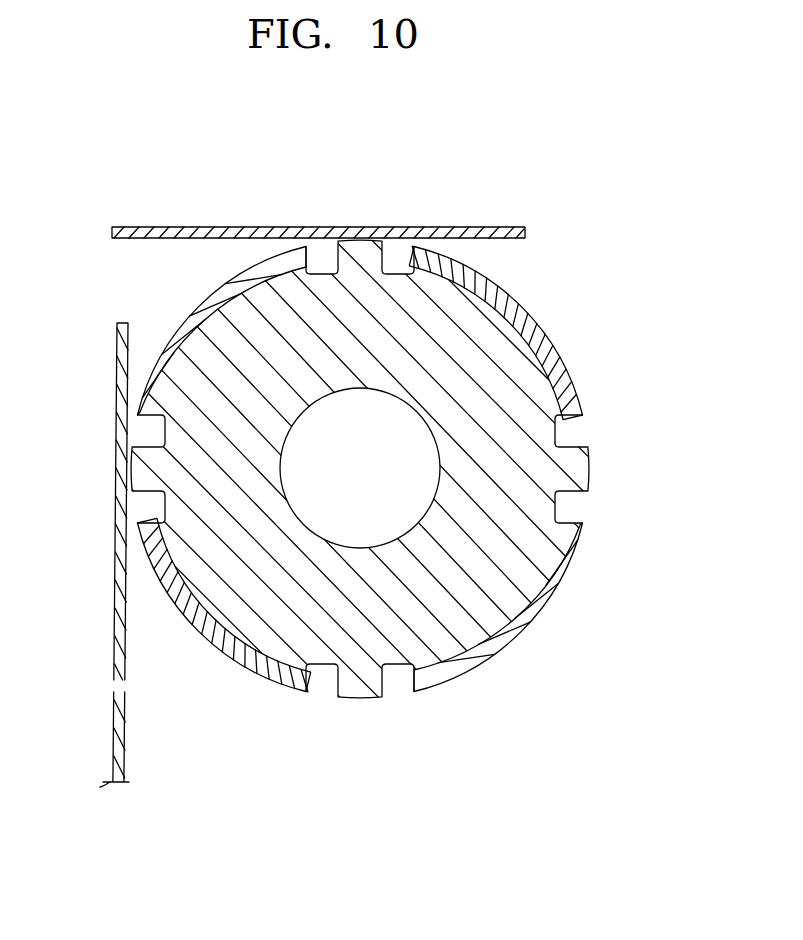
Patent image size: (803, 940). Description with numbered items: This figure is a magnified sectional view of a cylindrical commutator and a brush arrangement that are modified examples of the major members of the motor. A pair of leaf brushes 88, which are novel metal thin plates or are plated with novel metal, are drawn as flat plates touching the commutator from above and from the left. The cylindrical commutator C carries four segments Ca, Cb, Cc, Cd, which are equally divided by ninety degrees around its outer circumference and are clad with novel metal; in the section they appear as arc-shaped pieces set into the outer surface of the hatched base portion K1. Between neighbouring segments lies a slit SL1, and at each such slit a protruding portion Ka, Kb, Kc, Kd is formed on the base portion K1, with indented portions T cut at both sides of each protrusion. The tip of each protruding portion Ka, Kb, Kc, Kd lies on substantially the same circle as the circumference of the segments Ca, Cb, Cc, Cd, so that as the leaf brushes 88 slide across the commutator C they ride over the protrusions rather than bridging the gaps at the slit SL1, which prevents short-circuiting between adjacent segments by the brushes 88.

The leaf brushes 88 is at (492, 222).
The base portion K1 is at (473, 617).
The protruding portion Kd is at (359, 253).
The protruding portion Ka is at (585, 474).
The protruding portion Kb is at (353, 680).
The protruding portion Kc is at (131, 470).
The slit SL1 is at (603, 453).
The indented portions T is at (322, 685).
The cylindrical commutator C is at (376, 478).
The segment Ca is at (485, 330).
The segment Cb is at (500, 633).
The segment Cc is at (187, 622).
The segment Cd is at (165, 343).